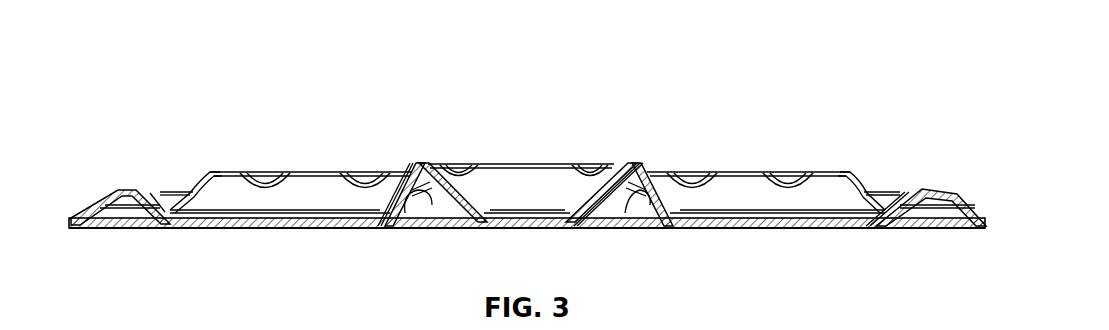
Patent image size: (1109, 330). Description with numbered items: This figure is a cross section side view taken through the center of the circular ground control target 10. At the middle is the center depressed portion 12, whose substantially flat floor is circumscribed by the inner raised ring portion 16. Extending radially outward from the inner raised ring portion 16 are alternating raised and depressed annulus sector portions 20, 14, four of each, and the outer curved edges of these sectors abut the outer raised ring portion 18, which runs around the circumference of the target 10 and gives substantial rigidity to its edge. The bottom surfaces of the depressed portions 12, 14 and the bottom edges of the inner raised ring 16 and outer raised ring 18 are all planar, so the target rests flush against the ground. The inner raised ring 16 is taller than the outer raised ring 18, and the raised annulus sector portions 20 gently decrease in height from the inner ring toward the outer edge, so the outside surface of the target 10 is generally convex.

The circular target 10 is at (186, 120).
The center depressed portion 12 is at (519, 195).
The depressed annulus sector portions 14 is at (290, 200).
The inner raised ring portion 16 is at (413, 160).
The outer raised ring portion 18 is at (950, 188).
The raised annulus sector portions 20 is at (300, 166).